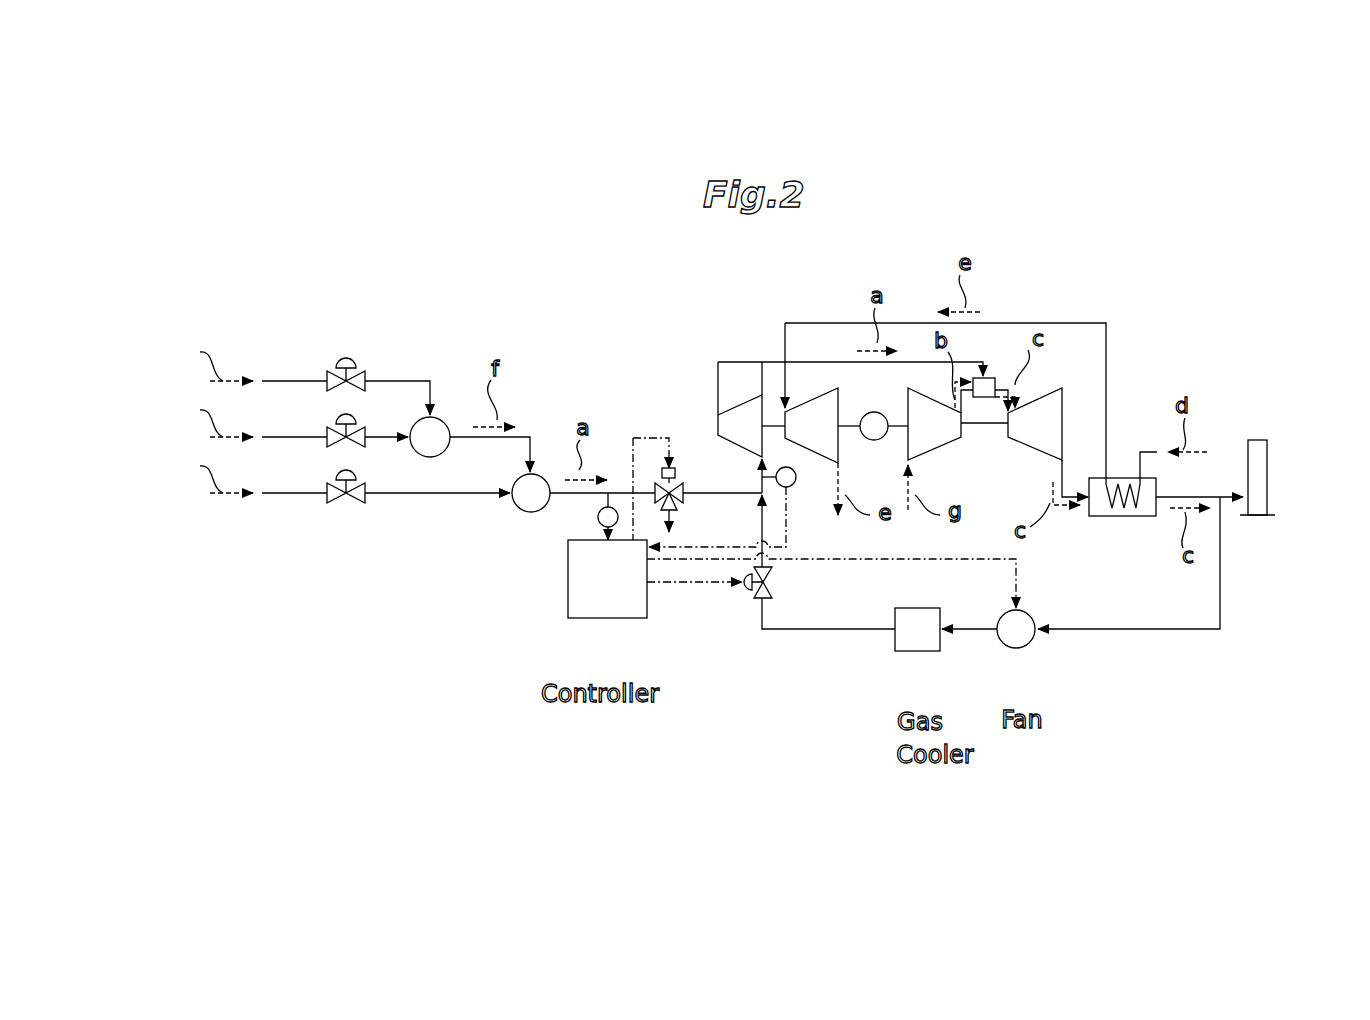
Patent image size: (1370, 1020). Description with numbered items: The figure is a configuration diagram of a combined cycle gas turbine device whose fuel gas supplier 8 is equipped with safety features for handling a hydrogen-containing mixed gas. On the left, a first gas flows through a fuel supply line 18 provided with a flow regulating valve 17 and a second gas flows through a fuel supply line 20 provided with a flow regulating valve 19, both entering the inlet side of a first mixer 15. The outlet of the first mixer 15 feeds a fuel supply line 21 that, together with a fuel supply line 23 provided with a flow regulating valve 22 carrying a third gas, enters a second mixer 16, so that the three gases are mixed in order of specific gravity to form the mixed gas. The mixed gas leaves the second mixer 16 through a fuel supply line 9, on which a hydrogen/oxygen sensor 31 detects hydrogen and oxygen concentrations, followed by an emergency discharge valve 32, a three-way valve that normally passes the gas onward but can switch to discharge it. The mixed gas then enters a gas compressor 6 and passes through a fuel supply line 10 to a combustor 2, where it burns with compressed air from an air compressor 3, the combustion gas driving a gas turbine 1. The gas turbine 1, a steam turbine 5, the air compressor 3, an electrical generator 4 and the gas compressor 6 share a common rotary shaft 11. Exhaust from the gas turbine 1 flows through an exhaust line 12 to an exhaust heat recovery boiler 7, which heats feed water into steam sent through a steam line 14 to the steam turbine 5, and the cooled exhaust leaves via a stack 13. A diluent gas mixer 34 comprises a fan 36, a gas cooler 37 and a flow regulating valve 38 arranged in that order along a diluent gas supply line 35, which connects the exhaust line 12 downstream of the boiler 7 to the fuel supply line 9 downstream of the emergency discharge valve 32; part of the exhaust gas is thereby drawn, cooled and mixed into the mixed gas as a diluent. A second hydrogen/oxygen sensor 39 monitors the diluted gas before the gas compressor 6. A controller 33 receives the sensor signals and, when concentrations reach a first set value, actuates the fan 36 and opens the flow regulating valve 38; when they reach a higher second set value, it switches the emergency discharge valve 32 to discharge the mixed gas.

The gas turbine 1 is at (1047, 390).
The combustor 2 is at (995, 378).
The air compressor 3 is at (920, 392).
The electrical generator 4 is at (874, 412).
The steam turbine 5 is at (815, 400).
The gas compressor 6 is at (747, 398).
The exhaust heat recovery boiler 7 is at (1122, 518).
The fuel gas supplier 8 is at (408, 530).
The fuel supply line 9 is at (710, 495).
The fuel supply line 10 is at (718, 377).
The rotary shaft 11 is at (983, 432).
The exhaust line 12 is at (1180, 494).
The stack 13 is at (1268, 462).
The steam line 14 is at (1106, 355).
The first mixer 15 is at (450, 447).
The second mixer 16 is at (518, 512).
The flow regulating valve 17 is at (354, 360).
The fuel supply line 18 is at (290, 381).
The flow regulating valve 19 is at (354, 416).
The fuel supply line 20 is at (290, 437).
The fuel supply line 21 is at (524, 432).
The flow regulating valve 22 is at (354, 472).
The fuel supply line 23 is at (290, 493).
The hydrogen/oxygen sensor 31 is at (598, 512).
The emergency discharge valve 32 is at (676, 466).
The controller 33 is at (610, 620).
The diluent gas mixer 34 is at (760, 640).
The diluent gas supply line 35 is at (1115, 632).
The fan 36 is at (1017, 650).
The gas cooler 37 is at (918, 653).
The flow regulating valve 38 is at (750, 590).
The hydrogen/oxygen sensor 39 is at (793, 487).